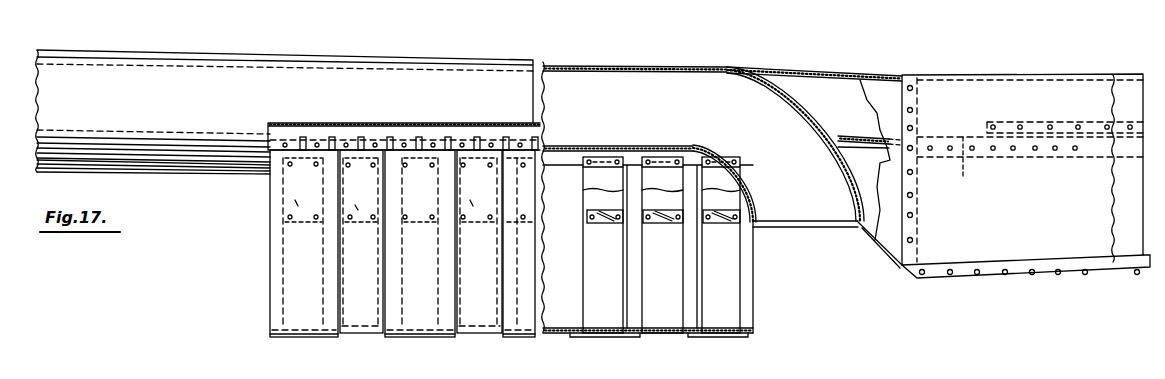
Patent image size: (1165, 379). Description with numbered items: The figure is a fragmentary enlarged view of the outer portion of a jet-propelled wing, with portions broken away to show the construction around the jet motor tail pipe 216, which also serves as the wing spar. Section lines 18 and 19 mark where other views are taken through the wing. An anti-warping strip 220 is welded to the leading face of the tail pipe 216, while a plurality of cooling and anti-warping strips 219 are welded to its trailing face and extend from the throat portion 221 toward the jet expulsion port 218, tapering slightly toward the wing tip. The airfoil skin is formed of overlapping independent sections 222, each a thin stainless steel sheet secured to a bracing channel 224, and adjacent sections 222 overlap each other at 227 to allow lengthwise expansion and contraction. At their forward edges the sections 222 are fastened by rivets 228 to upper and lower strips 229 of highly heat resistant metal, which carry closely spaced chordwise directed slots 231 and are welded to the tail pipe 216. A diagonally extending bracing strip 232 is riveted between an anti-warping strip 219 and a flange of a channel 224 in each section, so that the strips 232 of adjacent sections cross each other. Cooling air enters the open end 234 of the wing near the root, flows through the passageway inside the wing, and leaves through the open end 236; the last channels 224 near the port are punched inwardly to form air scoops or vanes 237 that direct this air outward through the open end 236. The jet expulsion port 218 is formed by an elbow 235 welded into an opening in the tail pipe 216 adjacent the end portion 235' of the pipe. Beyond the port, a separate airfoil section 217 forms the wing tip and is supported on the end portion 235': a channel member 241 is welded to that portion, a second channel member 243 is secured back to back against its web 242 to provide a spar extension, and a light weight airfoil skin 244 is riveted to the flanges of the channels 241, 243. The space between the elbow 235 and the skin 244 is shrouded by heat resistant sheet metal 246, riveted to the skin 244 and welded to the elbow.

The section line 18- 18 is at (278, 98).
The section line 19- 19 is at (412, 192).
The jet motor tail pipe 216 is at (595, 65).
The separate airfoil section 217 is at (1048, 250).
The jet expulsion port 218 is at (813, 226).
The cooling and anti-warping strips 219 is at (233, 163).
The anti-warping strip 220 is at (291, 56).
The throat portion 221 is at (153, 128).
The airfoil skin sections 222 is at (653, 333).
The bracing channel 224 is at (297, 217).
The overlap 227 is at (331, 323).
The rivets 228 is at (432, 123).
The upper and lower strips 229 is at (462, 122).
The chordwise directed slots 231 is at (348, 135).
The diagonally extending bracing strip 232 is at (283, 210).
The open end 234 is at (270, 304).
The elbow 235 is at (747, 183).
The end portion of the pipe 235' is at (817, 211).
The open end 236 is at (755, 286).
The air scoops or vanes 237 is at (606, 224).
The channel member 241 is at (867, 152).
The web 242 is at (970, 167).
The second channel member 243 is at (1094, 126).
The airfoil skin 244 is at (1033, 95).
The sheet metal 246 is at (878, 103).